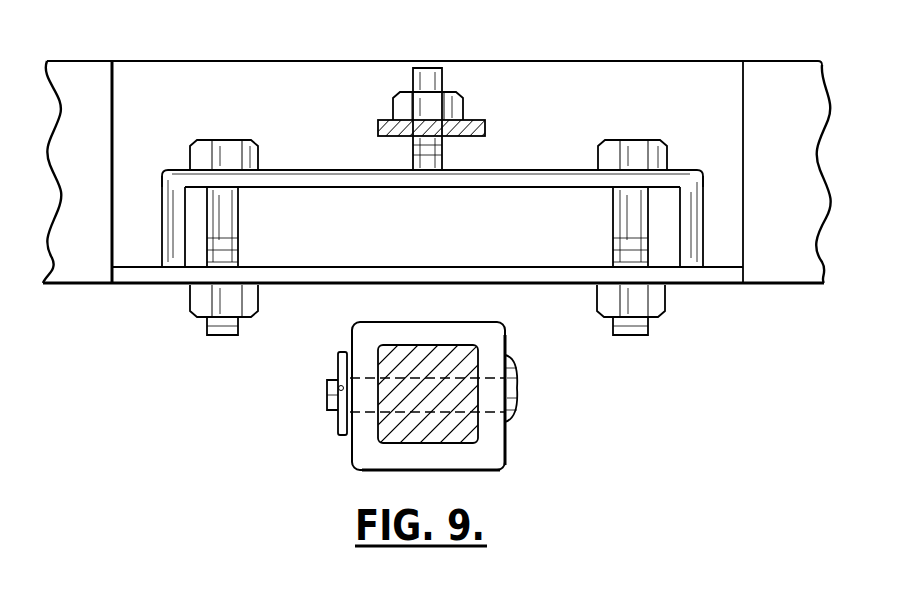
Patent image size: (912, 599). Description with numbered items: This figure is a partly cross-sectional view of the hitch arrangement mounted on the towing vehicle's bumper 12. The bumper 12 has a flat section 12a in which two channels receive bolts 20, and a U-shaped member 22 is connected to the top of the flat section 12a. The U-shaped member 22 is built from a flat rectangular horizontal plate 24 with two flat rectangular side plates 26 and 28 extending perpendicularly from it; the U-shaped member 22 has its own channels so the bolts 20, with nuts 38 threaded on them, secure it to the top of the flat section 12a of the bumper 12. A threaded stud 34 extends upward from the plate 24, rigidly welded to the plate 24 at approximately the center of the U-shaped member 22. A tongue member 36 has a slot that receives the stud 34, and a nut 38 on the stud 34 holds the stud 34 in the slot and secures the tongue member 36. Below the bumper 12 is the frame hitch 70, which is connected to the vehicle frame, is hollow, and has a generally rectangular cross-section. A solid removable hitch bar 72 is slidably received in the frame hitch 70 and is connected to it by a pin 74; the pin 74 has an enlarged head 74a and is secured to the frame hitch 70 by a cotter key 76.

The bumper 12 is at (227, 61).
The flat section 12a is at (338, 264).
The bolts 20 is at (239, 218).
The U-shaped member 22 is at (426, 184).
The horizontal plate 24 is at (533, 184).
The side plate 26 is at (163, 202).
The side plate 28 is at (698, 192).
The threaded stud 34 is at (413, 156).
The tongue member 36 is at (380, 122).
The nut 38 is at (458, 108).
The frame hitch 70 is at (434, 414).
The hitch bar 72 is at (443, 433).
The pin 74 is at (327, 395).
The enlarged head 74a is at (517, 395).
The cotter key 76 is at (338, 428).